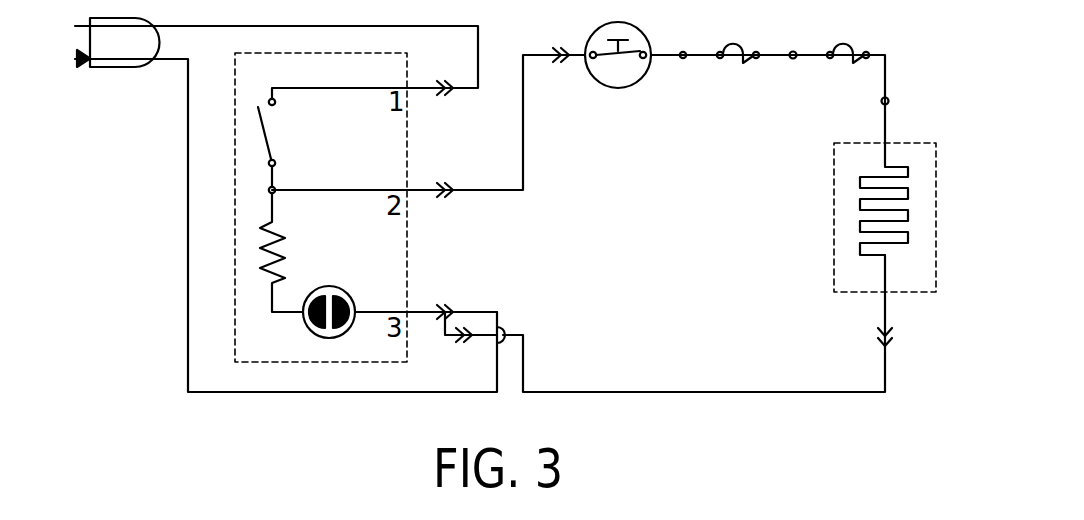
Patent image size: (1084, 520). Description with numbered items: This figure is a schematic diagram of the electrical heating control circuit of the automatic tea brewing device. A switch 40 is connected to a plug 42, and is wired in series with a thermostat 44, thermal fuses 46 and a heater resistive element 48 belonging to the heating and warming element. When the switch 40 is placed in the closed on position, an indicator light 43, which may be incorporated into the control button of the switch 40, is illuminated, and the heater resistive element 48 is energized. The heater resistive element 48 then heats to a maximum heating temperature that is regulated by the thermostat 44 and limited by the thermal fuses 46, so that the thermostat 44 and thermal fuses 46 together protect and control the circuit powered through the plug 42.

The switch 40 is at (407, 268).
The plug 42 is at (108, 67).
The indicator light 43 is at (316, 336).
The thermostat 44 is at (617, 88).
The thermal fuses 46 is at (744, 63).
The heater resistive element 48 is at (832, 218).